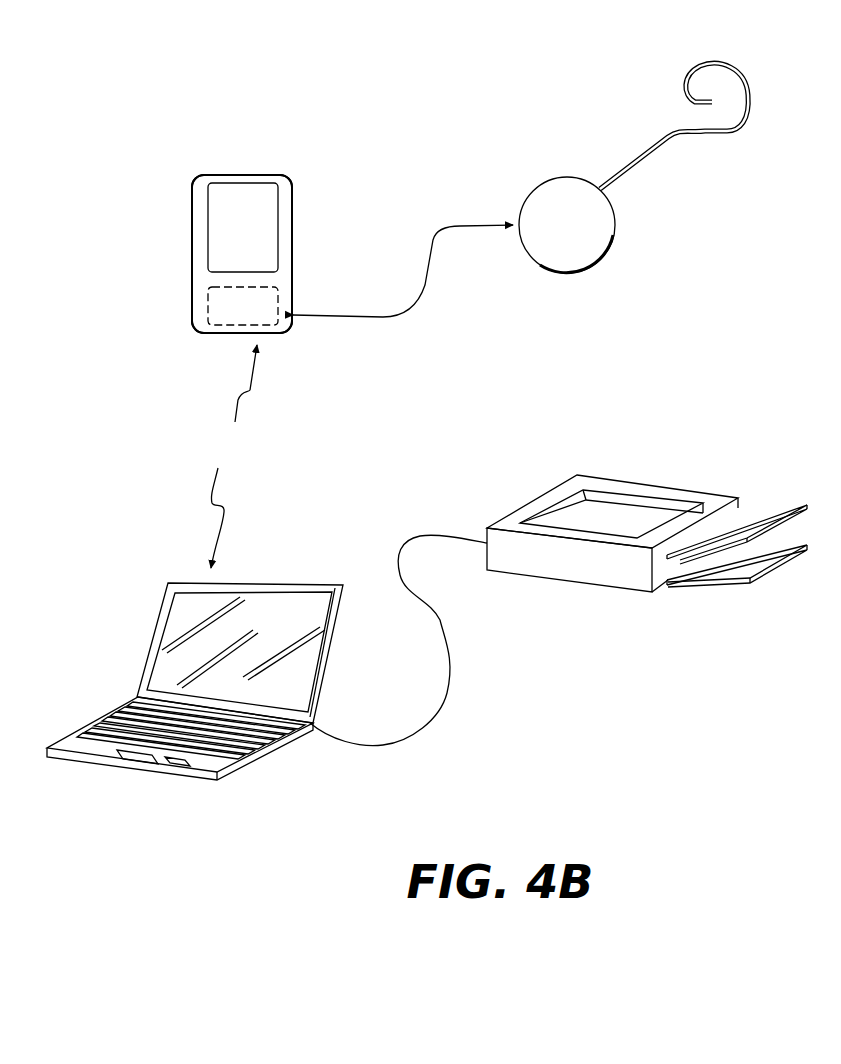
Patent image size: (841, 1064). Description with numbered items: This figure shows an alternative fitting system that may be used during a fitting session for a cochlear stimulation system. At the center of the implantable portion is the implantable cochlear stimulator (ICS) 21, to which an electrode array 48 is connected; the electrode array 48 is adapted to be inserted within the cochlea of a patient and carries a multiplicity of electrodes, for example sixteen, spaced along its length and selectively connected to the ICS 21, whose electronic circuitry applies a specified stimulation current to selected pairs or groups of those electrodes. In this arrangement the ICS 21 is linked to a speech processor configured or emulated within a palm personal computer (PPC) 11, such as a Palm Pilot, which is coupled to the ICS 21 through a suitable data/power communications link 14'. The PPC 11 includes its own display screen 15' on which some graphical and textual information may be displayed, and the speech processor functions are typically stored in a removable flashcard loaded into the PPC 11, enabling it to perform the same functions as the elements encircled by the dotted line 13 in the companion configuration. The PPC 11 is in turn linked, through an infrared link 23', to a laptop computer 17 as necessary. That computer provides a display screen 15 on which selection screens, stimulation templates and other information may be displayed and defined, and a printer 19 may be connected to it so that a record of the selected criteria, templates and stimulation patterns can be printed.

The palm personal computer 11 is at (192, 232).
The dotted line 13 is at (173, 293).
The display screen 15' is at (243, 227).
The data/power communications link 14' is at (403, 271).
The implantable cochlear stimulator 21 is at (568, 276).
The electrode array 48 is at (715, 63).
The infrared link 23' is at (246, 456).
The display screen 15 is at (197, 647).
The computer 17 is at (86, 728).
The printer 19 is at (577, 585).